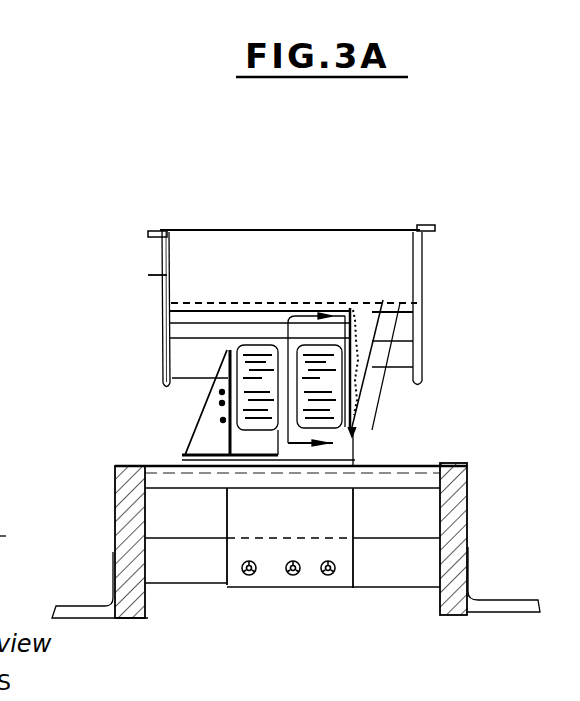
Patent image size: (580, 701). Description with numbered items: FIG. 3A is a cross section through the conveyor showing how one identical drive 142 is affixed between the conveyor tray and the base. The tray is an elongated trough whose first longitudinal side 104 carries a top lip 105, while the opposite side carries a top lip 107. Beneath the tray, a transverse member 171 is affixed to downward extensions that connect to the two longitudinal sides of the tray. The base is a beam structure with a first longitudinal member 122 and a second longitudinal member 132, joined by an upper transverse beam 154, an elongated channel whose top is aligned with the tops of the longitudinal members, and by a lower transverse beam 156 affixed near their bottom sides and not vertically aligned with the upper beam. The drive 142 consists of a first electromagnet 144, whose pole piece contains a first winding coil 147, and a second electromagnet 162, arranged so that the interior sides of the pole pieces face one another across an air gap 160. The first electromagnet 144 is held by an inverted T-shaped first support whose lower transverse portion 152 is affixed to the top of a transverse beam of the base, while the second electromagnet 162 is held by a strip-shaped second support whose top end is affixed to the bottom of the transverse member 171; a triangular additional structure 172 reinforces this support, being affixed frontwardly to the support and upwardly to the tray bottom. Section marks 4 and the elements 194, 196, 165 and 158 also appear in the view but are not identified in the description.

The first longitudinal side 104 is at (162, 273).
The top lip 105 is at (158, 232).
The top lip 107 is at (428, 210).
The left side wall 194 is at (169, 366).
The right side wall 196 is at (424, 361).
The transverse member 171 is at (188, 332).
The additional structure 172 is at (400, 350).
The section line 4- 4 is at (365, 383).
The air gap 160 is at (278, 346).
The second electromagnet 162 is at (413, 420).
The clip retainer 165 is at (358, 340).
The first drive 142 is at (436, 403).
The first winding coil 147 is at (270, 380).
The first electromagnet 144 is at (182, 405).
The base flange 158 is at (200, 428).
The upper transverse beam 154 is at (120, 514).
The first longitudinal member 122 is at (136, 534).
The second longitudinal member 132 is at (460, 516).
The lower transverse beam 156 is at (393, 557).
The lower transverse portion 152 is at (236, 585).